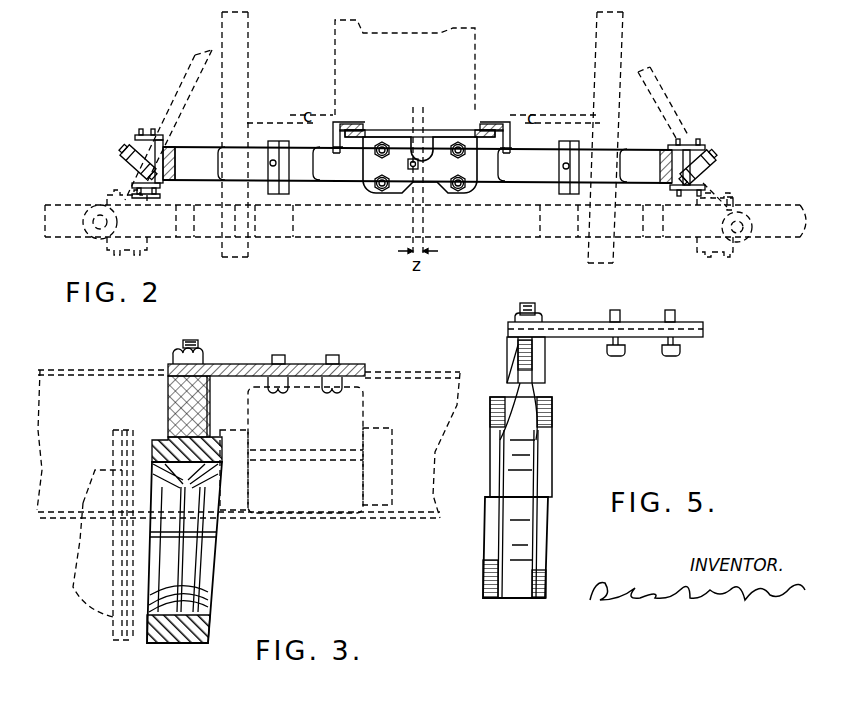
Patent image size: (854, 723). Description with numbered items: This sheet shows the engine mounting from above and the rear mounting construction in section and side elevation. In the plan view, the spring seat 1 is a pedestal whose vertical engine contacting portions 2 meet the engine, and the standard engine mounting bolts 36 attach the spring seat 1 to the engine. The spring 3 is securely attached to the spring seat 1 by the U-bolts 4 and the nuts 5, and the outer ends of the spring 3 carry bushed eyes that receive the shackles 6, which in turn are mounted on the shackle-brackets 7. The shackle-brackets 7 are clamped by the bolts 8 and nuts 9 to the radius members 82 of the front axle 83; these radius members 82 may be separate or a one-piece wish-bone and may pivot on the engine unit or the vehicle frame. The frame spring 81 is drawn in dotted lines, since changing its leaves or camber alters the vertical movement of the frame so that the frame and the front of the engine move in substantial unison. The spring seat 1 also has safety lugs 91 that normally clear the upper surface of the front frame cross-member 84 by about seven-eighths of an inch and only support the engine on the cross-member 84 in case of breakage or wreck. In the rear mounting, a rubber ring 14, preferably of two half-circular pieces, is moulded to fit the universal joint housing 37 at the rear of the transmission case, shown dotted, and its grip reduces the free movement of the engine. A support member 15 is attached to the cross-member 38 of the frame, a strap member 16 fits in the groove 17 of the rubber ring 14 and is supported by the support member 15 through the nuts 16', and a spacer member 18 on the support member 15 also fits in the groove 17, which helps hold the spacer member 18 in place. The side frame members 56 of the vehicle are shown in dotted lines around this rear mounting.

In FIG. 2, the spring seat 1 is at (470, 190).
In FIG. 2, the engine contacting portions 2 is at (337, 122).
In FIG. 2, the spring 3 is at (232, 150).
In FIG. 2, the U-bolts 4 is at (458, 142).
In FIG. 2, the nuts 5 is at (378, 186).
In FIG. 2, the shackles 6 is at (140, 135).
In FIG. 2, the shackle-brackets 7 is at (128, 167).
In FIG. 2, the bolts 8 is at (124, 157).
In FIG. 2, the nuts 9 is at (168, 152).
In FIG. 2, the engine mounting bolts 36 is at (352, 128).
In FIG. 2, the frame spring 81 is at (203, 235).
In FIG. 2, the radius members 82 is at (207, 50).
In FIG. 2, the front axle 83 is at (52, 232).
In FIG. 2, the front frame cross-member 84 is at (262, 118).
In FIG. 2, the safety lugs 91 is at (333, 147).
In FIG. 3, the rubber ring 14 is at (157, 438).
In FIG. 5, the rubber ring 14 is at (555, 423).
In FIG. 3, the support member 15 is at (250, 364).
In FIG. 5, the support member 15 is at (638, 323).
In FIG. 3, the strap member 16 is at (184, 574).
In FIG. 5, the strap member 16 is at (544, 490).
In FIG. 3, the nuts 16' is at (207, 340).
In FIG. 5, the nuts 16' is at (545, 301).
In FIG. 3, the groove 17 is at (210, 612).
In FIG. 3, the spacer member 18 is at (170, 393).
In FIG. 5, the spacer member 18 is at (547, 360).
In FIG. 3, the universal joint housing 37 is at (140, 617).
In FIG. 3, the cross-member 38 is at (365, 410).
In FIG. 3, the side frame members 56 is at (413, 372).